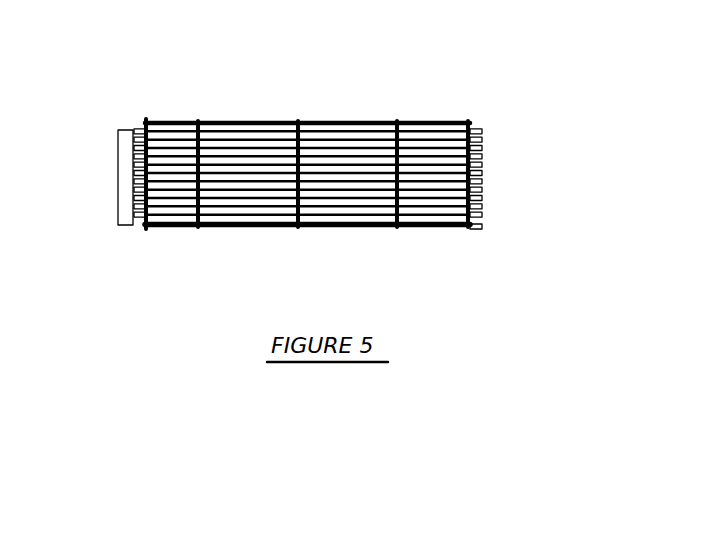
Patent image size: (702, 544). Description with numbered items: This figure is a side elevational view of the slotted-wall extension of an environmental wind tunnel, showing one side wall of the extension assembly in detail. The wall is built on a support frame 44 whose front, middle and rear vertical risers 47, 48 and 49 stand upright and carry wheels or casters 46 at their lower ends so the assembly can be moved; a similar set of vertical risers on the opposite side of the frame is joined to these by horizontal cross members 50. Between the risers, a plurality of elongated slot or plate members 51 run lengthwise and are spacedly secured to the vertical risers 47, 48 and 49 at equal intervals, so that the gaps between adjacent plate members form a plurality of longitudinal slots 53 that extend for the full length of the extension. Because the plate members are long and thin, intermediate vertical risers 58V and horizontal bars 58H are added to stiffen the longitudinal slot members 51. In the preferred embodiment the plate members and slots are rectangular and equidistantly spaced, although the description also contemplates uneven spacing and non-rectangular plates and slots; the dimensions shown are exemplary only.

The support frame 44 is at (314, 177).
The wheels or casters 46 is at (141, 229).
The front vertical riser 47 is at (138, 190).
The middle vertical riser 48 is at (296, 205).
The rear vertical riser 49 is at (517, 170).
The horizontal cross members 50 is at (147, 122).
The elongated slot or plate members 51 is at (484, 142).
The longitudinal slots 53 is at (240, 150).
The horizontal bars 58H is at (397, 122).
The intermediate vertical risers 58V is at (197, 198).